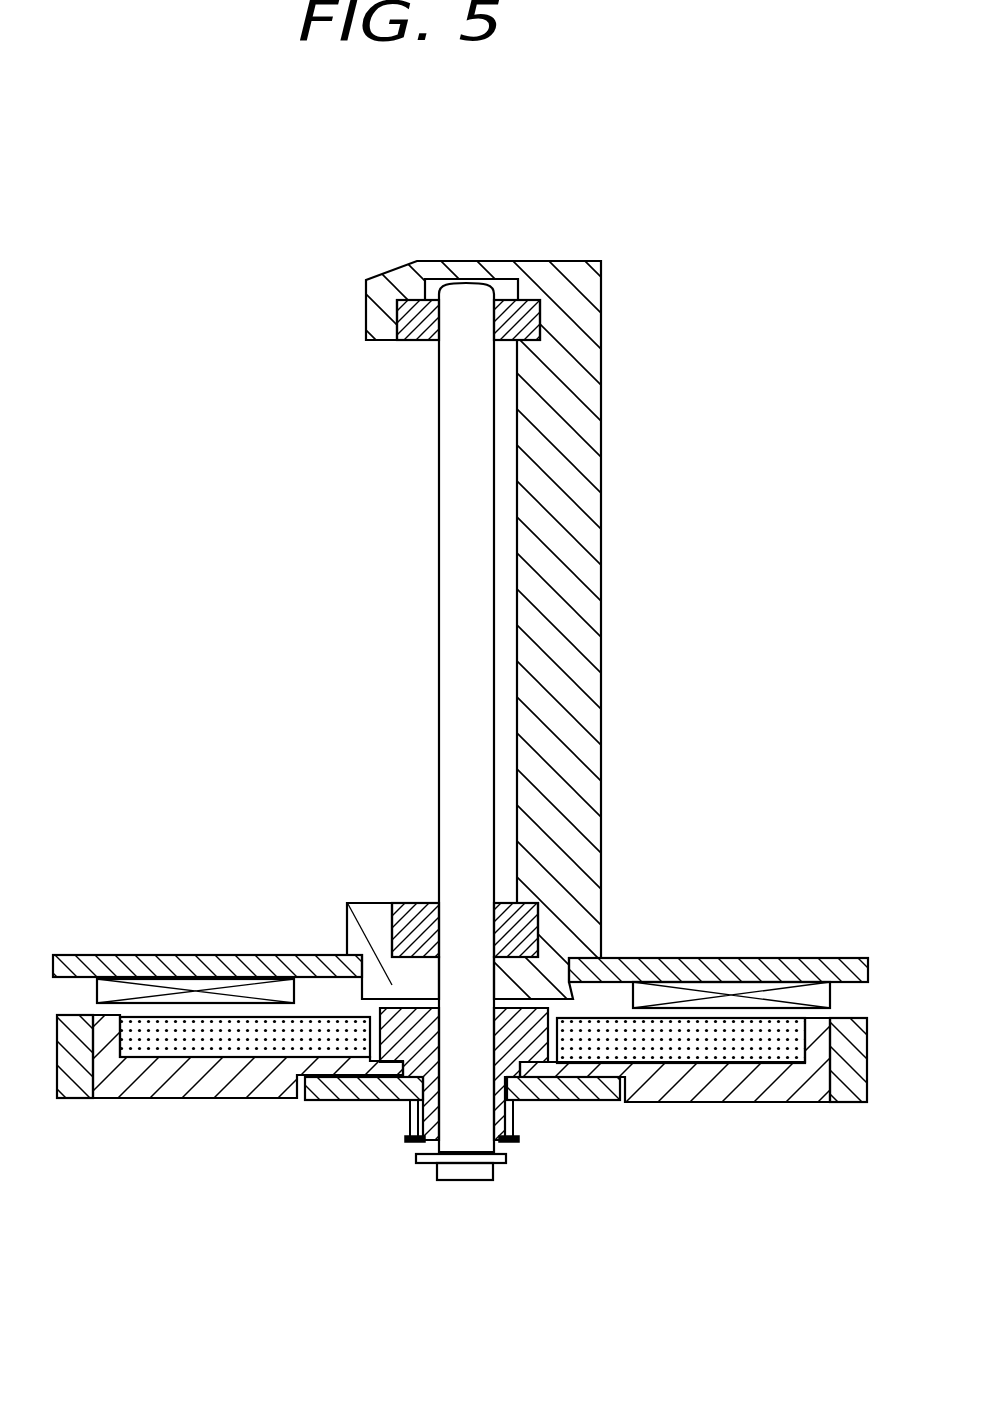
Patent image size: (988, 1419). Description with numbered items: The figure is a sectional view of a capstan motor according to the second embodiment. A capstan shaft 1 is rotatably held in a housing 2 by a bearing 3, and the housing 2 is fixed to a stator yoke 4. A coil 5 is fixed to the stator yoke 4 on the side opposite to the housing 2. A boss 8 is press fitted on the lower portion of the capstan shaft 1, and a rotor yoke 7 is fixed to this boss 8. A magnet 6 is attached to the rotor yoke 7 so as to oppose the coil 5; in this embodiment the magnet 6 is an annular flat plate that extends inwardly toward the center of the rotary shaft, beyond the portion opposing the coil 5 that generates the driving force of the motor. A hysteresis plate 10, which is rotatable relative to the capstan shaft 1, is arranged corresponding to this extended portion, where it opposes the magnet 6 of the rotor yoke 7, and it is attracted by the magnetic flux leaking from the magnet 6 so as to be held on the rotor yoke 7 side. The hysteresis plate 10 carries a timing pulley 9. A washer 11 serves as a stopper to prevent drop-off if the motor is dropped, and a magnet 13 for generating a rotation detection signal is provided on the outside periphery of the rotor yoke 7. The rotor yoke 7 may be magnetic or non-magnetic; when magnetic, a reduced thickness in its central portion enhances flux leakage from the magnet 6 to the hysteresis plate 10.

The capstan shaft 1 is at (452, 566).
The housing 2 is at (593, 502).
The bearing 3 is at (408, 335).
The stator yoke 4 is at (665, 957).
The coil 5 is at (740, 990).
The magnet 6 is at (165, 1052).
The rotor yoke 7 is at (273, 1098).
The boss 8 is at (385, 1016).
The timing pulley 9 is at (515, 1122).
The hysteresis plate 10 is at (607, 1100).
The washer 11 is at (490, 1180).
The magnet 13 is at (846, 1102).